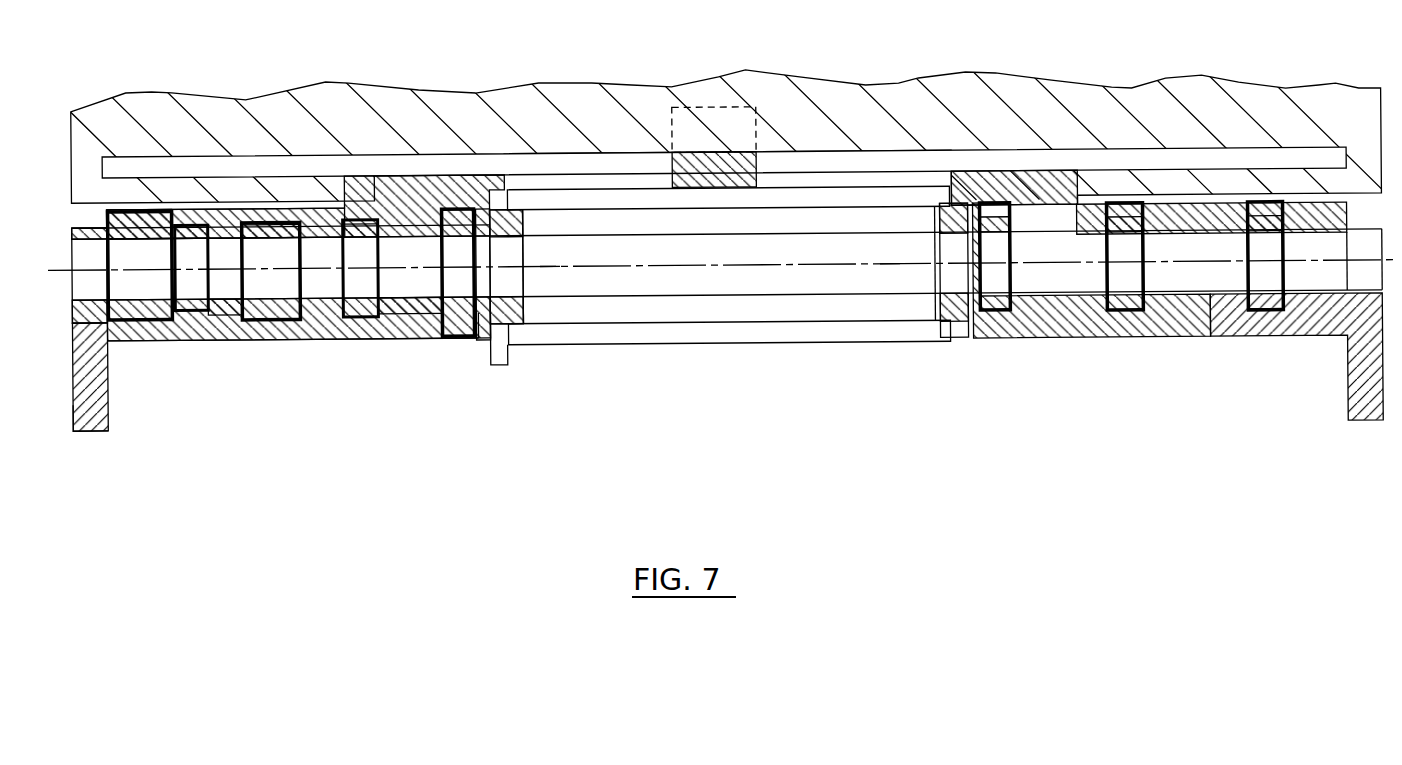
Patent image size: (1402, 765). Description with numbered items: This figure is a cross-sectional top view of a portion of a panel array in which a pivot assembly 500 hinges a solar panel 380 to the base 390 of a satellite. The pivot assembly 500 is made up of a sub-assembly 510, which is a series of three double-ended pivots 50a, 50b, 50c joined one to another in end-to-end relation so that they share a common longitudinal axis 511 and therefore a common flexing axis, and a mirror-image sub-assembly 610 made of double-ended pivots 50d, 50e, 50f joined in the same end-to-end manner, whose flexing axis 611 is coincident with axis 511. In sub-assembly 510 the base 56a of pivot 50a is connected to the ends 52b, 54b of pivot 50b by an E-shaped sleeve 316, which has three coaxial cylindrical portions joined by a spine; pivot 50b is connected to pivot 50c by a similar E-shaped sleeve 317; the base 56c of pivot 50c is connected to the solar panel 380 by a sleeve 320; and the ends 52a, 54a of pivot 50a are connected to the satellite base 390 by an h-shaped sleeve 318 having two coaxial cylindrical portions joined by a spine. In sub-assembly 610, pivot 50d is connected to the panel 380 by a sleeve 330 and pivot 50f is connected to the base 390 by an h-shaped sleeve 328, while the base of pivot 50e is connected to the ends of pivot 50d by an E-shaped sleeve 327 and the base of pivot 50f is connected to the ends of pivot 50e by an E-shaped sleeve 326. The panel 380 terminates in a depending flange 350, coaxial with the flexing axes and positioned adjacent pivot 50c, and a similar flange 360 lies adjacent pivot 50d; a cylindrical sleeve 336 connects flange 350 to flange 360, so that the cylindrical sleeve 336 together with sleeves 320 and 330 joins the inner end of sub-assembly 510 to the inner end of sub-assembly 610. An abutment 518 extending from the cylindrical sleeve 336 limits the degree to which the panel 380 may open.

The solar panel 380 is at (535, 103).
The E-shaped sleeve 316 is at (154, 212).
The sleeve 320 is at (387, 200).
The abutment 518 is at (757, 172).
The sleeve 330 is at (1056, 187).
The E-shaped sleeve 326 is at (1237, 218).
The base of pivot 50a 56a is at (127, 247).
The end of pivot 50a 52a is at (75, 284).
The longitudinal axis 511 is at (556, 266).
The flexing axis 611 is at (881, 266).
The double-ended pivot 50a is at (153, 287).
The end of pivot 50a 54a is at (193, 287).
The end of pivot 50b 52b is at (222, 287).
The double-ended pivot 50b is at (268, 292).
The end of pivot 50b 54b is at (320, 287).
The base of pivot 50c 56c is at (365, 288).
The double-ended pivot 50c is at (418, 290).
The E-shaped sleeve 317 is at (460, 316).
The h-shaped sleeve 318 is at (118, 348).
The base of a satellite 390 is at (95, 428).
The pivot sub-assembly 510 is at (347, 378).
The depending flange 350 is at (505, 356).
The cylindrical sleeve 336 is at (688, 336).
The flange 360 is at (950, 358).
The pivot assembly 500 is at (483, 394).
The E-shaped sleeve 327 is at (1004, 330).
The double-ended pivot 50d is at (1048, 285).
The double-ended pivot 50e is at (1181, 285).
The h-shaped sleeve 328 is at (1263, 310).
The double-ended pivot 50f is at (1316, 285).
The pivot sub-assembly 610 is at (1138, 354).